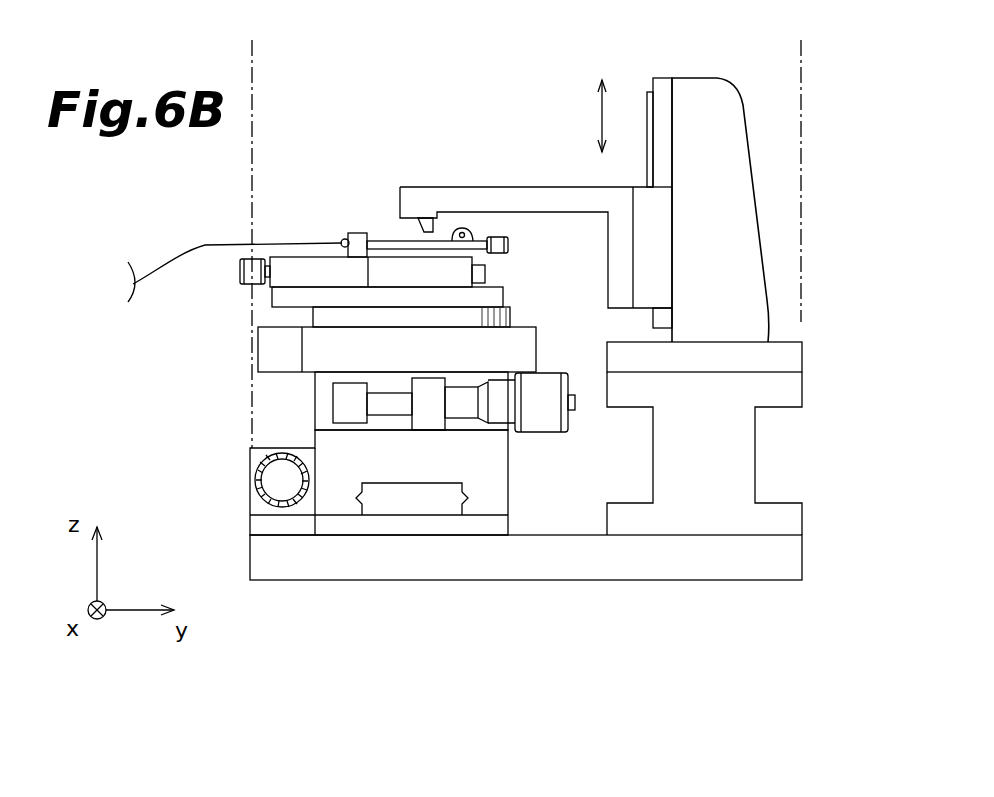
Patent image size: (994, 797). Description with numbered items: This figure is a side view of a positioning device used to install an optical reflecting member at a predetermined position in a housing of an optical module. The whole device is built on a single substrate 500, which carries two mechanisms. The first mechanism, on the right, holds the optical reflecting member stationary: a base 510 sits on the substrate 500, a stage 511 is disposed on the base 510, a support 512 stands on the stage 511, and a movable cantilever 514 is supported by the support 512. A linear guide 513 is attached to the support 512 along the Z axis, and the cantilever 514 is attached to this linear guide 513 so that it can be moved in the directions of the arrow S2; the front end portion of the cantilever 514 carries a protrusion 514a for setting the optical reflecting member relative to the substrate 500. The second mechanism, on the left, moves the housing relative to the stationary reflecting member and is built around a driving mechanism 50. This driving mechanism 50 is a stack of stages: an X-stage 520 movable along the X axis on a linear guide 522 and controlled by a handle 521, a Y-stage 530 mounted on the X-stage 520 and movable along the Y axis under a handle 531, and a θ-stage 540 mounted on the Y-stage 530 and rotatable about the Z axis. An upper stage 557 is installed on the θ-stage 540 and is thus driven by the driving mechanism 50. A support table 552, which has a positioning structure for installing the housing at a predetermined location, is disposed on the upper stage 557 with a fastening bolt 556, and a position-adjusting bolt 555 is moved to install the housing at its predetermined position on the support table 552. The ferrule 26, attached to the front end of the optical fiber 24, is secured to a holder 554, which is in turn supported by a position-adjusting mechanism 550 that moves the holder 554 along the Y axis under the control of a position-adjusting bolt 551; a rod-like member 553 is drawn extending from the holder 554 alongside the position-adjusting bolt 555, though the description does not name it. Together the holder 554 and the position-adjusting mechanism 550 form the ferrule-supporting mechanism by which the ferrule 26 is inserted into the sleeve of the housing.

The optical fiber 24 is at (183, 256).
The ferrule 26 is at (342, 240).
The driving mechanism 50 is at (160, 358).
The substrate 500 is at (785, 560).
The base 510 is at (748, 454).
The stage 511 is at (785, 357).
The support 512 is at (745, 178).
The linear guide 513 is at (663, 83).
The cantilever 514 is at (555, 190).
The protrusion 514a is at (440, 222).
The X-stage 520 is at (336, 456).
The handle 521 is at (257, 486).
The linear guide 522 is at (410, 508).
The Y-stage 530 is at (320, 405).
The handle 531 is at (546, 424).
The θ-stage 540 is at (327, 326).
The position-adjusting mechanism 550 is at (277, 292).
The position-adjusting bolt 551 is at (242, 270).
The support table 552 is at (465, 258).
The rod 553 is at (383, 240).
The holder 554 is at (352, 238).
The position-adjusting bolt 555 is at (510, 243).
The fastening bolt 556 is at (480, 274).
The upper stage 557 is at (500, 298).
The arrow S2 is at (602, 112).